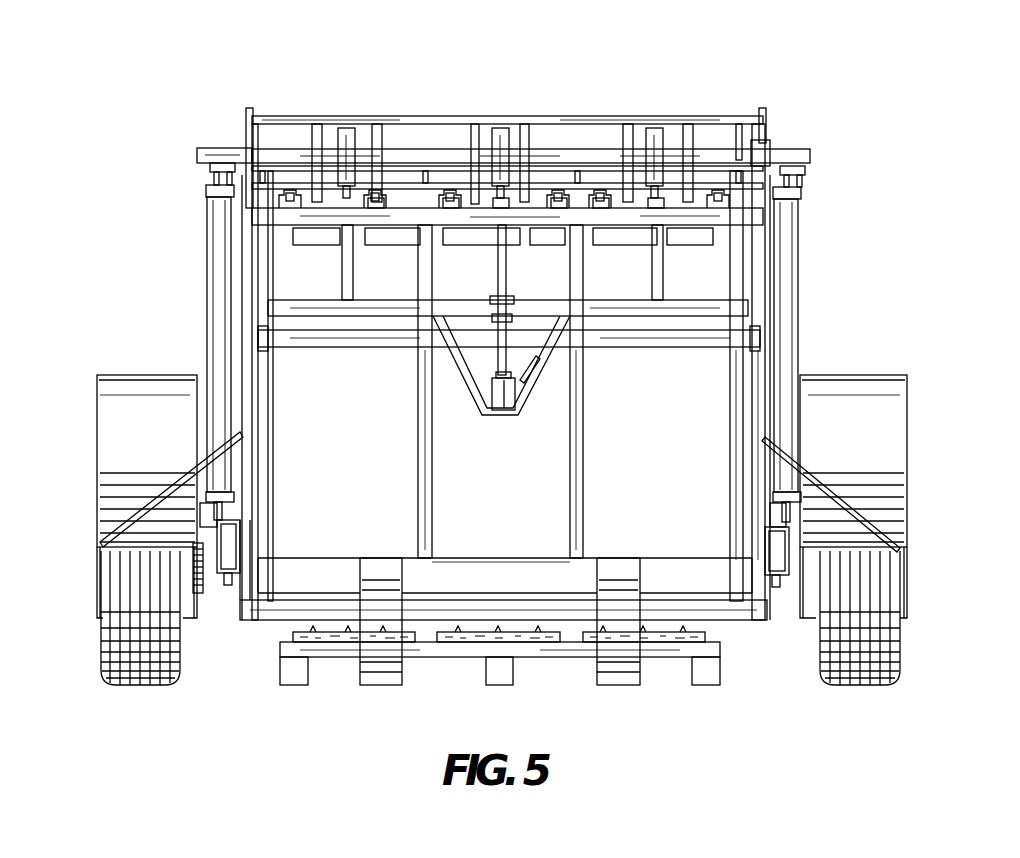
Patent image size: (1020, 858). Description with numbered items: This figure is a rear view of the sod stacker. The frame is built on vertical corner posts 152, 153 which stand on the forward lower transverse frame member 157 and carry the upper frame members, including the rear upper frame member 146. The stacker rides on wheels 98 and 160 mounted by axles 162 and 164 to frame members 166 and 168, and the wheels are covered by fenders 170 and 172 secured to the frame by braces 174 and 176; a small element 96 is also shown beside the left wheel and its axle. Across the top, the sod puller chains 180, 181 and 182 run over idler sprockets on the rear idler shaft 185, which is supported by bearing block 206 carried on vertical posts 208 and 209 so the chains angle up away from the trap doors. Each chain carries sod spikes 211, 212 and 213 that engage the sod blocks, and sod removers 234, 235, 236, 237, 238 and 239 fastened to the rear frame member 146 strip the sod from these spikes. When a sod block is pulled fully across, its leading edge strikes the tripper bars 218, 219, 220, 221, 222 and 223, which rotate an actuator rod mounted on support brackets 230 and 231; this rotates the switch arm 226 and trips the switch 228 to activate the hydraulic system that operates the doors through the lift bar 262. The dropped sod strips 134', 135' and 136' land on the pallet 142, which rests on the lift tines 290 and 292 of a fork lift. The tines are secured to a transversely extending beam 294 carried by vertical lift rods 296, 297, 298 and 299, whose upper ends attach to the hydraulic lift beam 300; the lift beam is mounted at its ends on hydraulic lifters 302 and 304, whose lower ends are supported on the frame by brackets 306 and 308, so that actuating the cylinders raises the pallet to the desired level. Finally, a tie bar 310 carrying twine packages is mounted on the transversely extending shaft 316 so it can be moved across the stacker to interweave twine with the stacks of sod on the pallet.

The support bracket 230 is at (250, 110).
The support bracket 231 is at (767, 122).
The switch 228 is at (771, 150).
The switch arm 226 is at (741, 148).
The lift beam 300 is at (811, 157).
The rear idler shaft 185 is at (442, 150).
The bearing block 206 is at (246, 148).
The vertical post 208 is at (230, 196).
The vertical post 209 is at (796, 218).
The hydraulic lifter 302 is at (215, 291).
The hydraulic lifter 304 is at (786, 259).
The vertical corner post 152 is at (243, 256).
The vertical corner post 153 is at (768, 291).
The tripper bar 218 is at (318, 128).
The sod puller chain 180 is at (346, 132).
The tripper bar 219 is at (382, 132).
The tripper bar 220 is at (477, 128).
The sod puller chain 181 is at (508, 132).
The tripper bar 221 is at (528, 122).
The tripper bar 222 is at (630, 128).
The sod puller chain 182 is at (660, 132).
The tripper bar 223 is at (695, 128).
The sod remover 234 is at (290, 210).
The sod spike 211 is at (376, 210).
The sod remover 235 is at (410, 212).
The sod remover 236 is at (450, 210).
The lift bar 262 is at (484, 240).
The sod spike 212 is at (512, 210).
The sod remover 237 is at (558, 210).
The sod remover 238 is at (600, 210).
The rear upper frame member 146 is at (640, 238).
The sod spike 213 is at (672, 210).
The sod remover 239 is at (718, 240).
The transversely extending shaft 316 is at (365, 350).
The tie bar 310 is at (262, 340).
The vertical lift rod 296 is at (268, 541).
The vertical lift rod 297 is at (432, 498).
The vertical lift rod 298 is at (580, 491).
The vertical lift rod 299 is at (730, 525).
The transversely extending beam 294 is at (463, 563).
The bracket 306 is at (218, 514).
The bracket 308 is at (770, 512).
The fender 170 is at (105, 441).
The wheel 98 is at (100, 651).
The fender 172 is at (898, 443).
The wheel 160 is at (880, 689).
The brace 174 is at (170, 496).
The brace 176 is at (812, 491).
The axle 162 is at (208, 526).
The axle 164 is at (790, 541).
The rack 96 is at (200, 591).
The frame member 166 is at (224, 581).
The frame member 168 is at (780, 581).
The forward lower transverse frame member 157 is at (266, 607).
The lift tine 290 is at (381, 686).
The lift tine 292 is at (618, 686).
The pallet 142 is at (468, 670).
The sod strip 134' is at (354, 665).
The sod strip 135' is at (498, 669).
The sod strip 136' is at (644, 678).